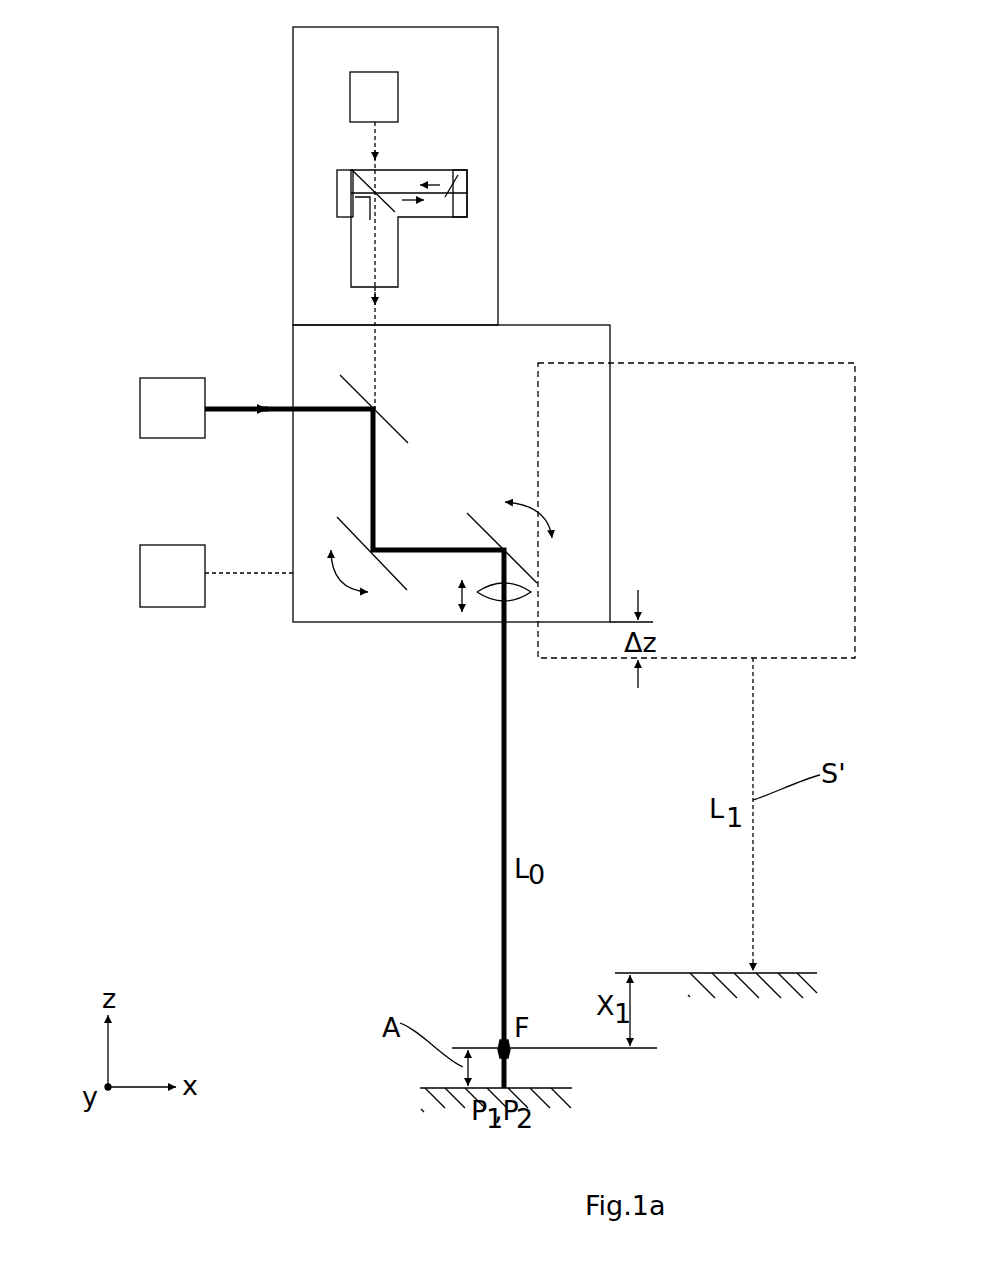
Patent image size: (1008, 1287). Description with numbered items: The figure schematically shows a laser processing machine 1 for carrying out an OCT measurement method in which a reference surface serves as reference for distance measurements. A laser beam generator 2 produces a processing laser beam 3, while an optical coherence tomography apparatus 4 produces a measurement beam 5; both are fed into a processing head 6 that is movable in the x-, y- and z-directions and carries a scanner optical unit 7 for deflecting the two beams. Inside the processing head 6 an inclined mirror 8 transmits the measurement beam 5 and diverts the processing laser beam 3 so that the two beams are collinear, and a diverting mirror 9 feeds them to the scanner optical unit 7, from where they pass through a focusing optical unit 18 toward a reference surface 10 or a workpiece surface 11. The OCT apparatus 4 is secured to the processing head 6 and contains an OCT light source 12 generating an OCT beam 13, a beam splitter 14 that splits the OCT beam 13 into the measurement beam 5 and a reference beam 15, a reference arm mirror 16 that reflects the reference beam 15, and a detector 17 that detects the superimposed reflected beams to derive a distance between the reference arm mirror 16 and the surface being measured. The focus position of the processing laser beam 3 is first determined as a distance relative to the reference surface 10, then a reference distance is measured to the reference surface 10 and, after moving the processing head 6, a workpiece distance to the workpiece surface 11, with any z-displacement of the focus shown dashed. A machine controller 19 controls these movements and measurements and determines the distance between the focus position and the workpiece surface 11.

The laser processing machine 1 is at (238, 238).
The laser beam generator 2 is at (140, 403).
The processing laser beam 3 is at (240, 413).
The optical coherence tomography (OCT) apparatus 4 is at (503, 63).
The measurement beam 5 is at (373, 300).
The processing head 6 is at (550, 323).
The scanner optical unit 7 is at (538, 558).
The inclined mirror 8 is at (393, 420).
The diverting mirror 9 is at (387, 580).
The reference surface 10 is at (440, 1086).
The workpiece surface 11 is at (780, 973).
The OCT light source 12 is at (357, 90).
The OCT beam 13 is at (367, 153).
The beam splitter 14 is at (388, 220).
The reference beam 15 is at (465, 173).
The reference arm mirror 16 is at (468, 195).
The detector (OCT sensor) 17 is at (350, 192).
The focusing optical unit 18 is at (483, 598).
The machine controller 19 is at (140, 575).